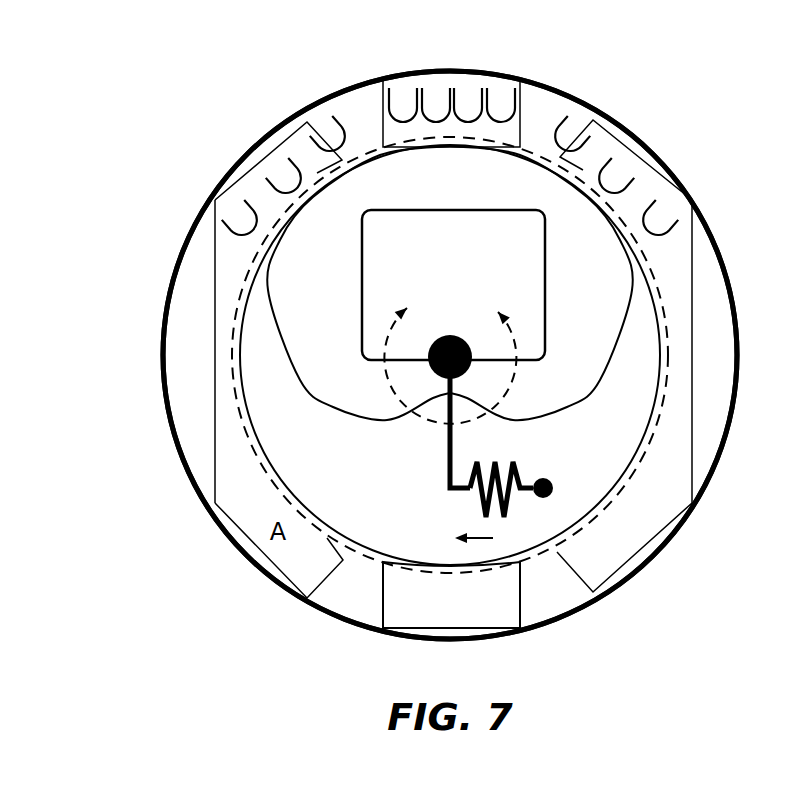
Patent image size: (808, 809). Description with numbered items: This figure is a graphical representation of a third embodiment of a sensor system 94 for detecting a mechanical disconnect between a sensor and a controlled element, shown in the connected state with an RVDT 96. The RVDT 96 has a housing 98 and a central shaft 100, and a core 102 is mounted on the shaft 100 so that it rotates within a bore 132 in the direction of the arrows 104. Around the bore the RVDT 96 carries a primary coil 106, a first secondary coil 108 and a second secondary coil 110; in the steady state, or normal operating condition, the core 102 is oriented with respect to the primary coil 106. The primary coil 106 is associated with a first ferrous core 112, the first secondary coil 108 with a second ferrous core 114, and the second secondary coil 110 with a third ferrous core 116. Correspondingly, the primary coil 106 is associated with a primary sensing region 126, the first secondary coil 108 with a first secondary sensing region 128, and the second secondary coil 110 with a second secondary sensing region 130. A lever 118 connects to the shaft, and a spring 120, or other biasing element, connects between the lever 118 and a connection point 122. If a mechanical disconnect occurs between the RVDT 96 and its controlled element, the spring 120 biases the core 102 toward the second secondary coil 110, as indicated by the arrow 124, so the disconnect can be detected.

The sensor system 94 is at (137, 320).
The RVDT 96 is at (163, 355).
The housing 98 is at (684, 512).
The central shaft 100 is at (450, 335).
The core 102 is at (425, 202).
The arrows 104 is at (406, 406).
The primary coil 106 is at (490, 102).
The first secondary coil 108 is at (245, 205).
The second secondary coil 110 is at (602, 140).
The first ferrous core 112 is at (375, 628).
The second ferrous core 114 is at (237, 478).
The third ferrous core 116 is at (683, 323).
The lever 118 is at (448, 460).
The spring 120 is at (518, 470).
The connection point 122 is at (553, 489).
The arrow 124 is at (486, 538).
The primary sensing region 126 is at (518, 52).
The first secondary sensing region 128 is at (288, 102).
The second secondary sensing region 130 is at (622, 108).
The bore 132 is at (285, 433).